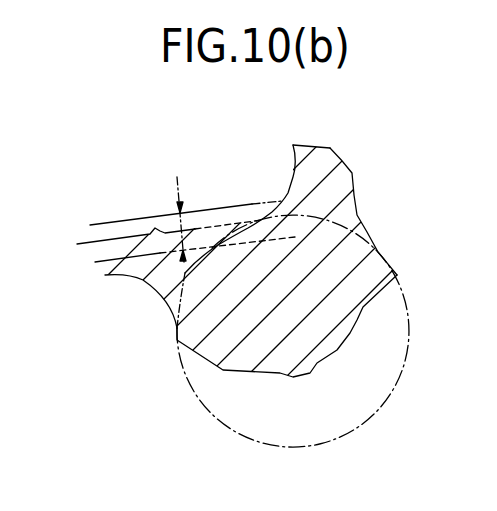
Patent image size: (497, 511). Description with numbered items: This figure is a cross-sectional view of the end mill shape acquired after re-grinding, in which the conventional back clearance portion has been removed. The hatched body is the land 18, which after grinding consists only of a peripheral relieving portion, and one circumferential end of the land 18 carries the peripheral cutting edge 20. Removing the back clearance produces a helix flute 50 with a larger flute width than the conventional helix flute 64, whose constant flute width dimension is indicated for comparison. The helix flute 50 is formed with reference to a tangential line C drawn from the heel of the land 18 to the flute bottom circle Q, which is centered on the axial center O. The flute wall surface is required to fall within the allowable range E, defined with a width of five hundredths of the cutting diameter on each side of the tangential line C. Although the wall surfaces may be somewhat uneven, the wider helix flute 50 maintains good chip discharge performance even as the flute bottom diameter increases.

The land 18 is at (312, 145).
The peripheral cutting edge 20 is at (293, 145).
The helix flute 50 is at (160, 181).
The helix flute 64 is at (285, 200).
The allowable range E is at (187, 219).
The tangential line C is at (77, 244).
The flute bottom circle Q is at (353, 430).
The axial center O is at (284, 340).